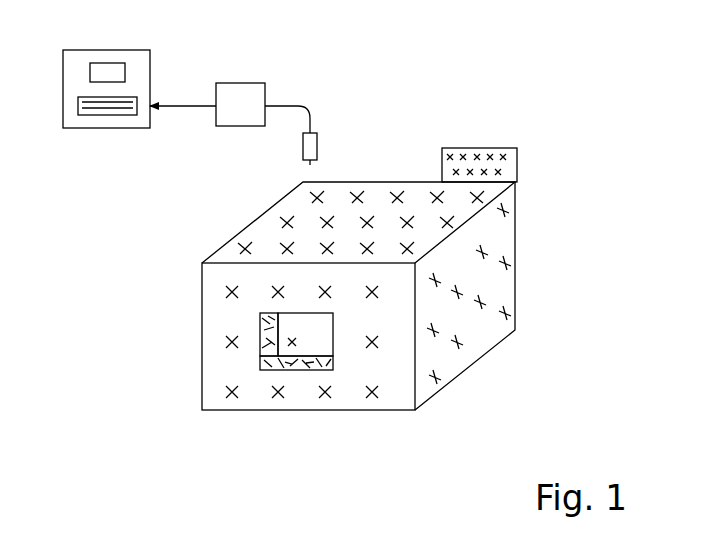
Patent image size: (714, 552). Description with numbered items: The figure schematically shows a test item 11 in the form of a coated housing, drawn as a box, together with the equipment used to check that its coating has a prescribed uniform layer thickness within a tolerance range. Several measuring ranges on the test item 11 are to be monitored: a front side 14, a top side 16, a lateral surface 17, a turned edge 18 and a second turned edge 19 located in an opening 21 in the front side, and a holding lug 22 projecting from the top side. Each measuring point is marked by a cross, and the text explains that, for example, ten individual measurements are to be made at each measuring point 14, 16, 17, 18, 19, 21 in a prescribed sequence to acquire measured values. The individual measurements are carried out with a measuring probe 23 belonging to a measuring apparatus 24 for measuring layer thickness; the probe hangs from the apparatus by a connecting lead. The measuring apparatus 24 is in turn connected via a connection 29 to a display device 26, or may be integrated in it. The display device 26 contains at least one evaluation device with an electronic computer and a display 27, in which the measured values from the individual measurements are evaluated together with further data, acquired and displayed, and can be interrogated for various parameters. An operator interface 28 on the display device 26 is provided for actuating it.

The test item 11 is at (355, 294).
The front side 14 is at (213, 380).
The top side 16 is at (270, 222).
The lateral surface 17 is at (509, 283).
The turned edge 18 is at (287, 367).
The turned edge 19 is at (260, 320).
The opening 21 is at (310, 340).
The holding lug 22 is at (509, 168).
The measuring probe 23 is at (317, 147).
The measuring apparatus 24 is at (248, 82).
The display device 26 is at (123, 132).
The display 27 is at (107, 68).
The operator interface 28 is at (100, 108).
The signal connection 29 is at (153, 97).